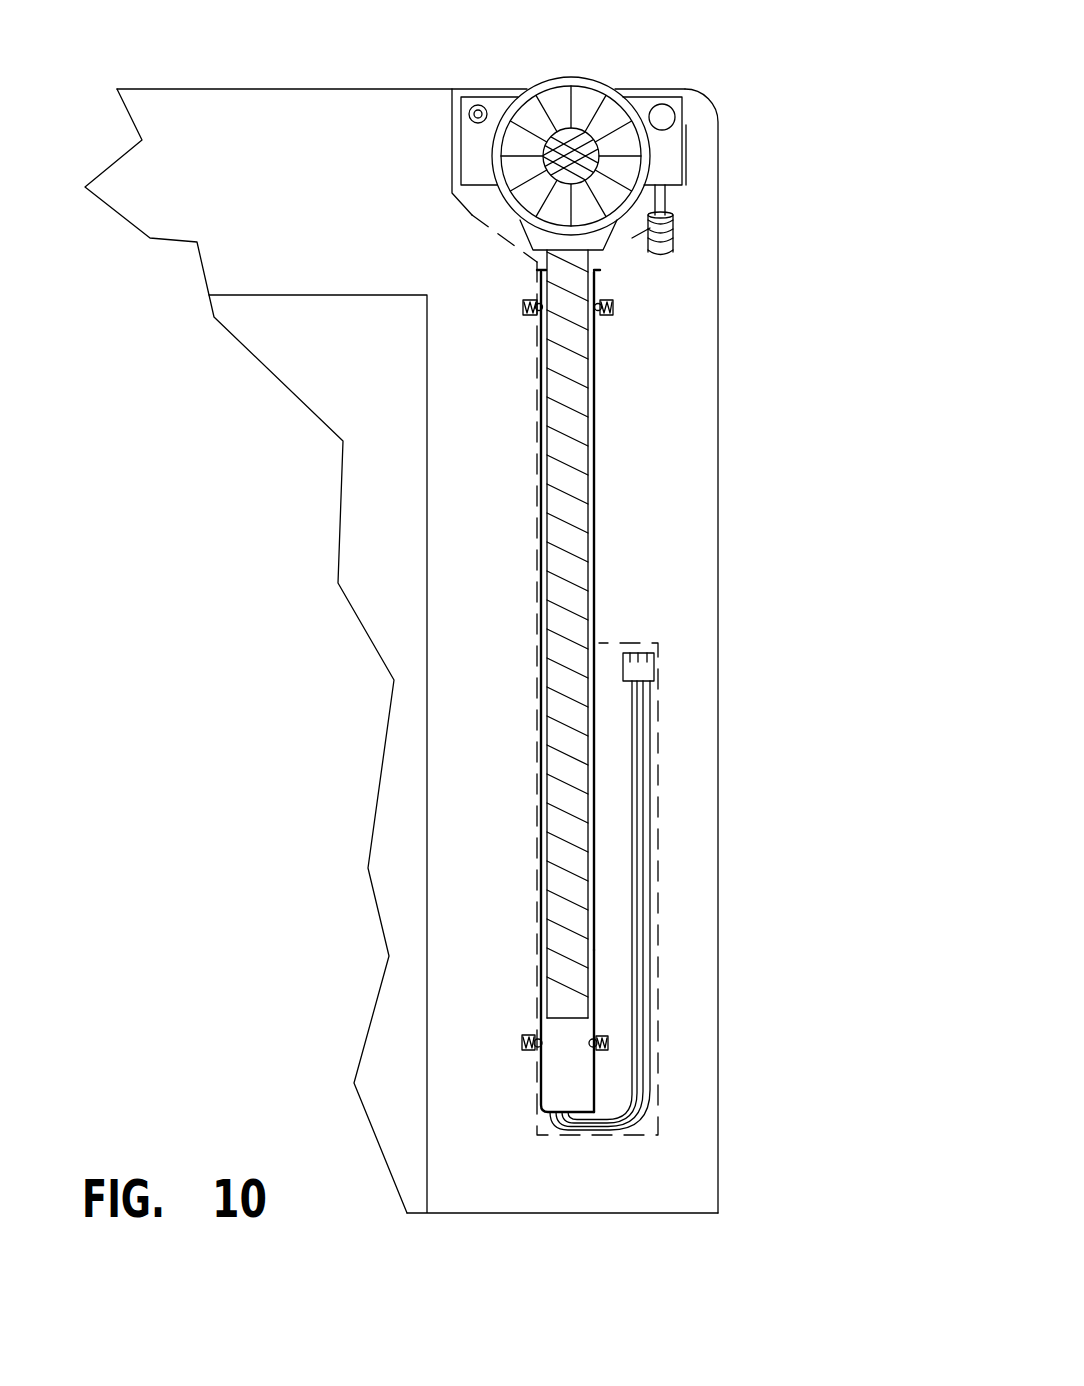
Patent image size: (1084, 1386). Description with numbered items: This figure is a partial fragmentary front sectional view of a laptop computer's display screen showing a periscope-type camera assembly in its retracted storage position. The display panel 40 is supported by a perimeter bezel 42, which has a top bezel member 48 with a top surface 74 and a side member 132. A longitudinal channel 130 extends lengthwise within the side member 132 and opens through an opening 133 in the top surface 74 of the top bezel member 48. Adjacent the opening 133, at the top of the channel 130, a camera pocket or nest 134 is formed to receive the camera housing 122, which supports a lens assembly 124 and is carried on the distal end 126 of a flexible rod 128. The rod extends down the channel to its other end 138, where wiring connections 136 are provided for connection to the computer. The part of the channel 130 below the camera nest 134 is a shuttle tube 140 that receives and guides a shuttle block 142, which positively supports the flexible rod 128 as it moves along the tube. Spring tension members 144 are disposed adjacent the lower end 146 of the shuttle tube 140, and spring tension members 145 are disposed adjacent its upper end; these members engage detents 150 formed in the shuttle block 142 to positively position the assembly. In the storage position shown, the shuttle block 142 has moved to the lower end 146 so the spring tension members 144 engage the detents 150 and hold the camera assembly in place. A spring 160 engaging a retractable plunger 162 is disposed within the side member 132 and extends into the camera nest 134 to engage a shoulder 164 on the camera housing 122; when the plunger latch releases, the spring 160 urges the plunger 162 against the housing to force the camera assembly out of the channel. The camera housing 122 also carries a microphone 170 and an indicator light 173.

The display panel 40 is at (370, 385).
The perimeter bezel 42 is at (722, 550).
The top bezel member 48 is at (230, 218).
The top surface 74 is at (177, 88).
The camera housing 122 is at (461, 133).
The lens assembly 124 is at (625, 147).
The distal end 126 is at (607, 263).
The flexible rod 128 is at (562, 667).
The longitudinal channel 130 is at (595, 605).
The side member 132 is at (690, 803).
The opening 133 is at (653, 89).
The camera nest 134 is at (472, 215).
The wiring connections 136 is at (645, 877).
The other end 138 is at (588, 1130).
The shuttle tube 140 is at (596, 447).
The shuttle block 142 is at (575, 1090).
The spring tension members 144 is at (523, 303).
The spring tension members 145 is at (527, 1038).
The lower end 146 is at (596, 972).
The detents 150 is at (533, 1050).
The spring 160 is at (673, 245).
The retractable plunger 162 is at (665, 205).
The shoulder 164 is at (666, 190).
The microphone 170 is at (676, 117).
The indicator light 173 is at (480, 104).